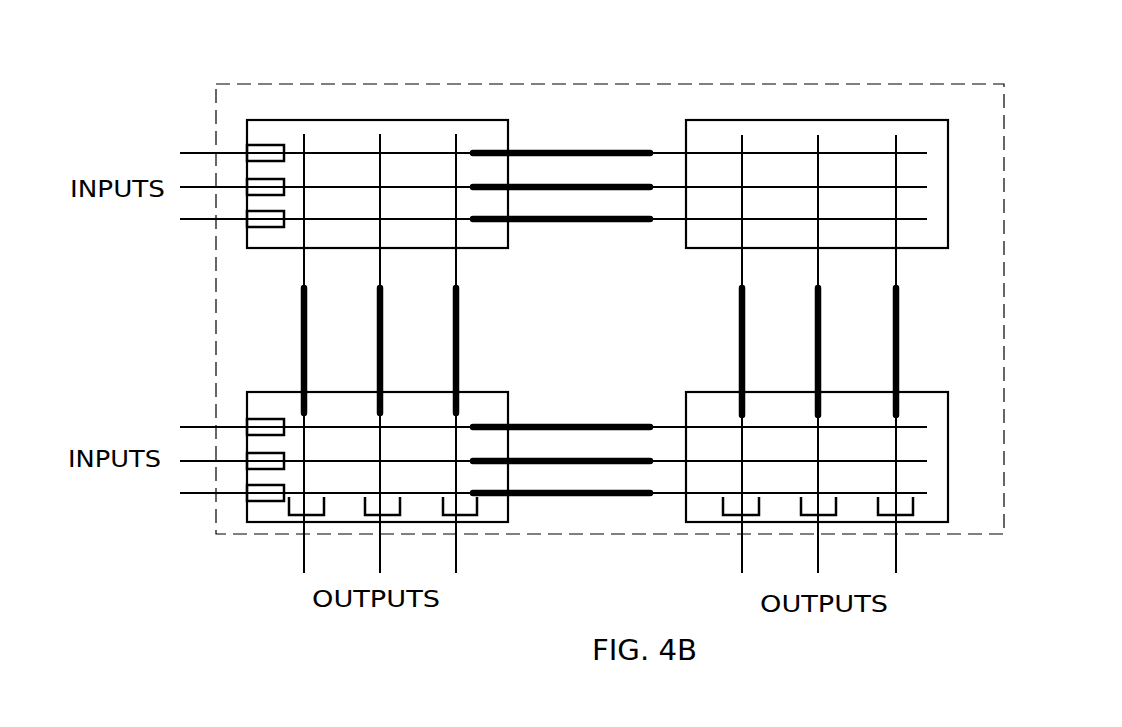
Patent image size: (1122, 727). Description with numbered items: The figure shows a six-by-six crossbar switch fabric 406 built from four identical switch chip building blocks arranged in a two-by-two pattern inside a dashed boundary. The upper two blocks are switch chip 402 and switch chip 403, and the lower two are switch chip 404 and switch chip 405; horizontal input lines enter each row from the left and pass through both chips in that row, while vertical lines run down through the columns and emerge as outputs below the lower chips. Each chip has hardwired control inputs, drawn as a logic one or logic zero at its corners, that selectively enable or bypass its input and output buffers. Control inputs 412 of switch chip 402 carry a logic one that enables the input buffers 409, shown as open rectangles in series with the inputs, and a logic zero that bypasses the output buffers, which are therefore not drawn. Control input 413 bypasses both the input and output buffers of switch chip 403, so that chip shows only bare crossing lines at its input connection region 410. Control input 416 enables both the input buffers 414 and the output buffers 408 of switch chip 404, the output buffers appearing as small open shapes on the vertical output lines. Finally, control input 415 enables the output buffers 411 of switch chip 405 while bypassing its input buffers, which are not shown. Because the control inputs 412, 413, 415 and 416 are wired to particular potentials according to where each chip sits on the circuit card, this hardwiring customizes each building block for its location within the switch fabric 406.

The switch chip 402 is at (474, 115).
The switch chip 403 is at (898, 140).
The switch chip 404 is at (242, 406).
The switch chip 405 is at (950, 417).
The crossbar switch fabric 406 is at (1004, 197).
The output buffers 408 is at (390, 515).
The input buffers 409 is at (262, 140).
The block connection point 410 is at (708, 140).
The output buffers 411 is at (920, 506).
The control inputs 412 is at (222, 256).
The control input 413 is at (662, 262).
The input buffers 414 is at (278, 415).
The control input 415 is at (668, 540).
The control input 416 is at (235, 535).